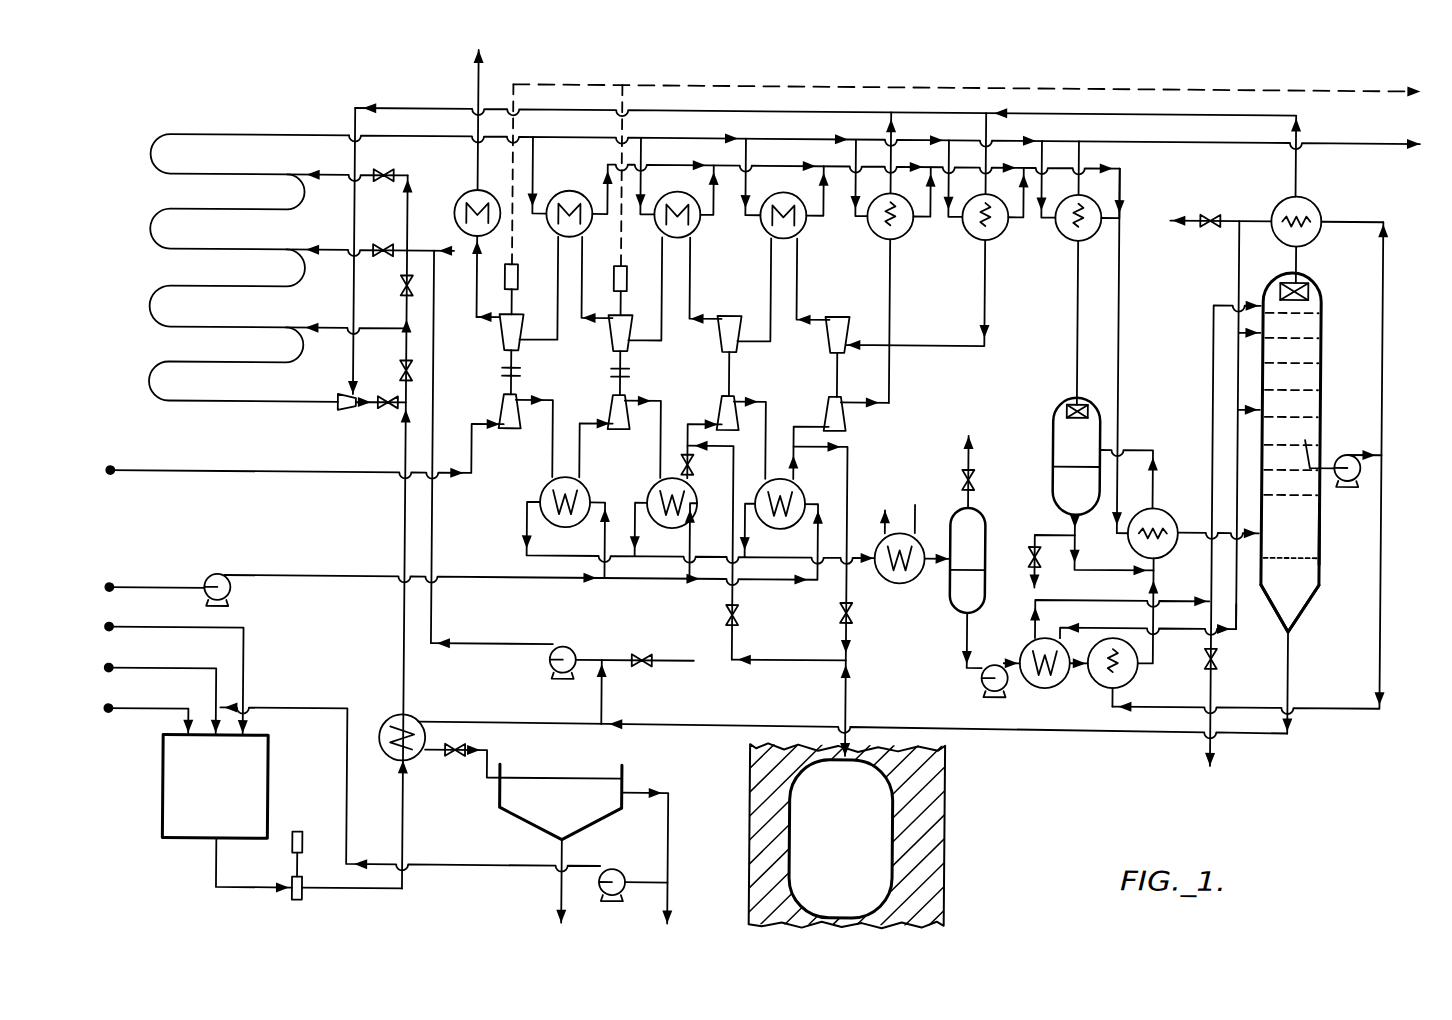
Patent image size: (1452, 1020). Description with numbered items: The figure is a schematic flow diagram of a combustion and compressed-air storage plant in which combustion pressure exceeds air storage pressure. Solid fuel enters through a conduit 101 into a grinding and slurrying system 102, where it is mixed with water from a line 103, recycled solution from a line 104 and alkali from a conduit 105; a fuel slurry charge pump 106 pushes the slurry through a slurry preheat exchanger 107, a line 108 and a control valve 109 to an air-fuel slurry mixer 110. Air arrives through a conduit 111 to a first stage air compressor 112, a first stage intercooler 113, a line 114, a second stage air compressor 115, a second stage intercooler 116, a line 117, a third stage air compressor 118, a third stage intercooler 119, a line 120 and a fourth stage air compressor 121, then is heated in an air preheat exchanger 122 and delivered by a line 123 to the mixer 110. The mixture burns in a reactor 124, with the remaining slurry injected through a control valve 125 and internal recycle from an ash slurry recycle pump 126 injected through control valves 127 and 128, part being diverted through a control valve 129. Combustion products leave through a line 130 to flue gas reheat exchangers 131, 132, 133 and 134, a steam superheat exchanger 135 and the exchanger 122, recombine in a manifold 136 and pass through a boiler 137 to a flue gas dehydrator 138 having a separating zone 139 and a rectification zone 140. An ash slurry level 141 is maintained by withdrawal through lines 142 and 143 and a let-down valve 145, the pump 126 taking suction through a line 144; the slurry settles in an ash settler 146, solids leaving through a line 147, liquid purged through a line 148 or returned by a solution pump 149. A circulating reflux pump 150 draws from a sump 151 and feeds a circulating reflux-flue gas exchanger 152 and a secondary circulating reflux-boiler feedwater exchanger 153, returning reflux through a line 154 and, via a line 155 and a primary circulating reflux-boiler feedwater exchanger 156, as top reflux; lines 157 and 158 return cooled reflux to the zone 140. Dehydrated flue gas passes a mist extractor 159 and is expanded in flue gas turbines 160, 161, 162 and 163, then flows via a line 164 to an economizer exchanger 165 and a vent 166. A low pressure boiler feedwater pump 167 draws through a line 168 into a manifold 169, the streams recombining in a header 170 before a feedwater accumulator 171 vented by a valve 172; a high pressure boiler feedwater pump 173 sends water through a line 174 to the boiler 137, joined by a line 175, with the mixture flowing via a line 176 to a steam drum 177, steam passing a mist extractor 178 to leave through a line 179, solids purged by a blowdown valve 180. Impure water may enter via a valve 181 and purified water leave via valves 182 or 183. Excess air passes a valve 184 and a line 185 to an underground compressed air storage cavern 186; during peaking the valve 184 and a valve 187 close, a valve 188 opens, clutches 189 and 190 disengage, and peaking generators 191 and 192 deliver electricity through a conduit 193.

The conduit 101 is at (163, 712).
The grinding and slurrying system 102 is at (188, 842).
The line 103 is at (163, 672).
The line 104 is at (284, 711).
The conduit 105 is at (163, 631).
The fuel slurry charge pump 106 is at (291, 897).
The slurry preheat exchanger 107 is at (418, 718).
The line 108 is at (402, 521).
The control valve 109 is at (387, 413).
The air-fuel slurry mixer 110 is at (338, 412).
The conduit 111 is at (163, 474).
The first stage air compressor 112 is at (500, 398).
The first stage intercooler 113 is at (542, 489).
The line 114 is at (579, 455).
The second stage air compressor 115 is at (602, 398).
The second stage intercooler 116 is at (647, 489).
The line 117 is at (676, 440).
The third stage air compressor 118 is at (716, 398).
The third stage intercooler 119 is at (788, 486).
The line 120 is at (824, 407).
The fourth stage air compressor 121 is at (828, 396).
The air preheat exchanger 122 is at (878, 235).
The line 123 is at (399, 109).
The reactor 124 is at (236, 404).
The control valve 125 is at (397, 366).
The ash slurry recycle pump 126 is at (570, 648).
The control valve 127 is at (383, 247).
The control valve 128 is at (384, 173).
The control valve 129 is at (398, 292).
The line 130 is at (424, 136).
The first stage flue gas reheat exchanger 131 is at (970, 239).
The second stage flue gas reheat exchanger 132 is at (764, 238).
The third stage flue gas reheat exchanger 133 is at (696, 230).
The fourth stage flue gas reheat exchanger 134 is at (550, 230).
The steam superheat exchanger 135 is at (1057, 236).
The manifold 136 is at (1120, 254).
The boiler 137 is at (1165, 507).
The flue gas dehydrator 138 is at (1314, 600).
The separating zone 139 is at (1316, 528).
The rectification zone 140 is at (1320, 346).
The ash slurry level 141 is at (1318, 554).
The line 142 is at (1294, 655).
The line 143 is at (505, 724).
The line 144 is at (606, 696).
The let-down valve 145 is at (458, 758).
The ash settler 146 is at (534, 822).
The line 147 is at (562, 888).
The line 148 is at (674, 887).
The solution pump 149 is at (620, 872).
The circulating reflux pump 150 is at (1360, 464).
The sump 151 is at (1318, 444).
The circulating reflux-flue gas exchanger 152 is at (1314, 200).
The secondary circulating reflux-boiler feedwater exchanger 153 is at (1100, 687).
The line 154 is at (1240, 624).
The line 155 is at (1084, 625).
The primary circulating reflux-boiler feedwater exchanger 156 is at (1046, 688).
The reflux line 157 is at (1239, 260).
The line 158 is at (1211, 357).
The mist extractor 159 is at (1314, 295).
The first stage flue gas turbine 160 is at (822, 335).
The second stage flue gas turbine 161 is at (716, 336).
The third stage flue gas turbine 162 is at (606, 334).
The fourth stage flue gas turbine 163 is at (491, 345).
The line 164 is at (473, 323).
The economizer exchanger 165 is at (452, 247).
The vent 166 is at (471, 108).
The low pressure boiler feedwater pump 167 is at (223, 578).
The line 168 is at (163, 592).
The manifold 169 is at (670, 581).
The header 170 is at (454, 202).
The feedwater accumulator 171 is at (951, 608).
The valve 172 is at (976, 480).
The high pressure boiler feedwater pump 173 is at (982, 678).
The line 174 is at (1155, 688).
The line 175 is at (1096, 590).
The line 176 is at (1154, 452).
The steam drum 177 is at (1052, 442).
The mist extractor 178 is at (1066, 404).
The line 179 is at (1357, 136).
The blowdown valve 180 is at (1030, 547).
The valve 181 is at (642, 654).
The valve 182 is at (1218, 658).
The valve 183 is at (1214, 209).
The valve 184 is at (836, 618).
The line 185 is at (849, 679).
The underground compressed air storage cavern 186 is at (786, 812).
The valve 187 is at (690, 466).
The valve 188 is at (741, 615).
The clutch 189 is at (519, 374).
The clutch 190 is at (623, 373).
The peaking generator 191 is at (516, 293).
The peaking generator 192 is at (625, 278).
The conduit 193 is at (1353, 86).